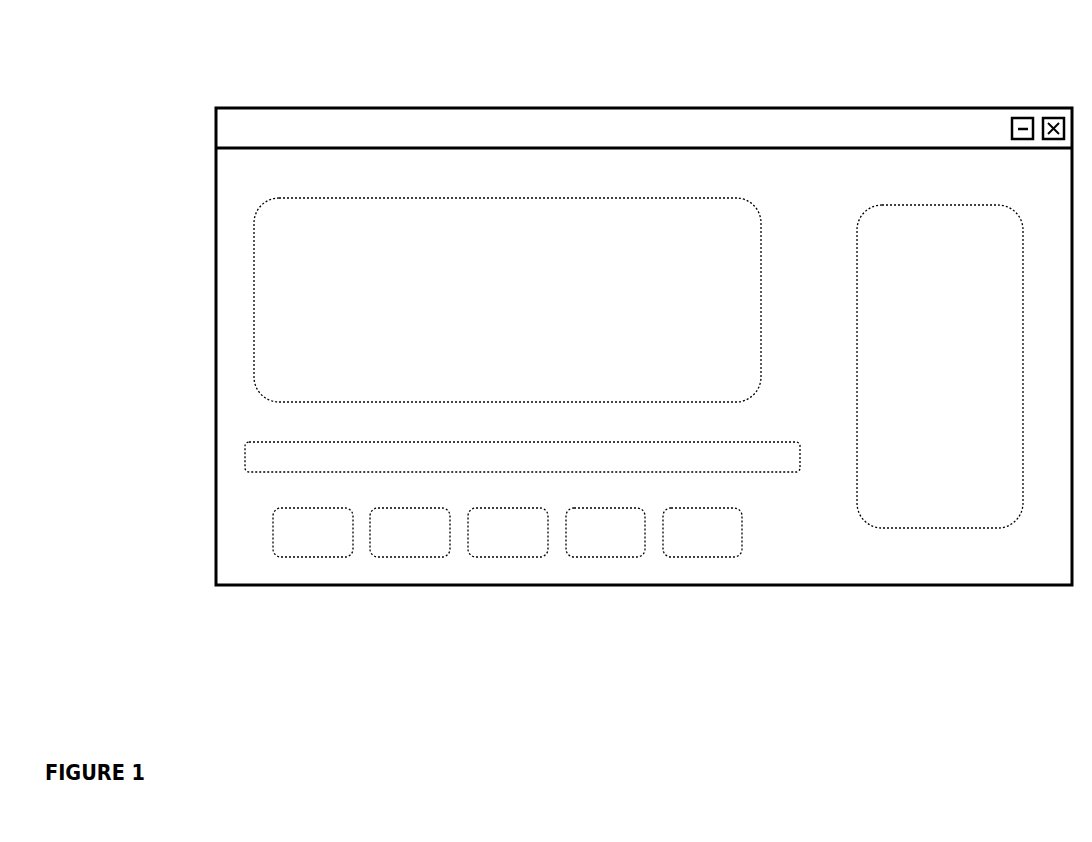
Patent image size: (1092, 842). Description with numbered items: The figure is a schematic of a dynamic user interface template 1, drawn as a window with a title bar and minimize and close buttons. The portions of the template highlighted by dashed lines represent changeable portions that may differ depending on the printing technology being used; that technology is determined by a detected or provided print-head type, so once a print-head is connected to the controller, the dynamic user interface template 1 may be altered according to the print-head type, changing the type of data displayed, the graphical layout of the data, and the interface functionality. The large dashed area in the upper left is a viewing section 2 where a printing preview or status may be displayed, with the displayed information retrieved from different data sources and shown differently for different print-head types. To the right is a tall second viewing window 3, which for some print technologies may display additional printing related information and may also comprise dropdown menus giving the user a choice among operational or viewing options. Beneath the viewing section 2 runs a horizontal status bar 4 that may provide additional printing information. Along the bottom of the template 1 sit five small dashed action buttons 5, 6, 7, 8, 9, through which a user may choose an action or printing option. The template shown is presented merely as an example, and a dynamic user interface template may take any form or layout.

The dynamic user interface template 1 is at (556, 70).
The viewing section 2 is at (710, 198).
The second viewing window 3 is at (884, 208).
The status bar 4 is at (748, 441).
The action button 5 is at (282, 507).
The action button 6 is at (387, 507).
The action button 7 is at (484, 507).
The action button 8 is at (582, 507).
The action button 9 is at (679, 507).